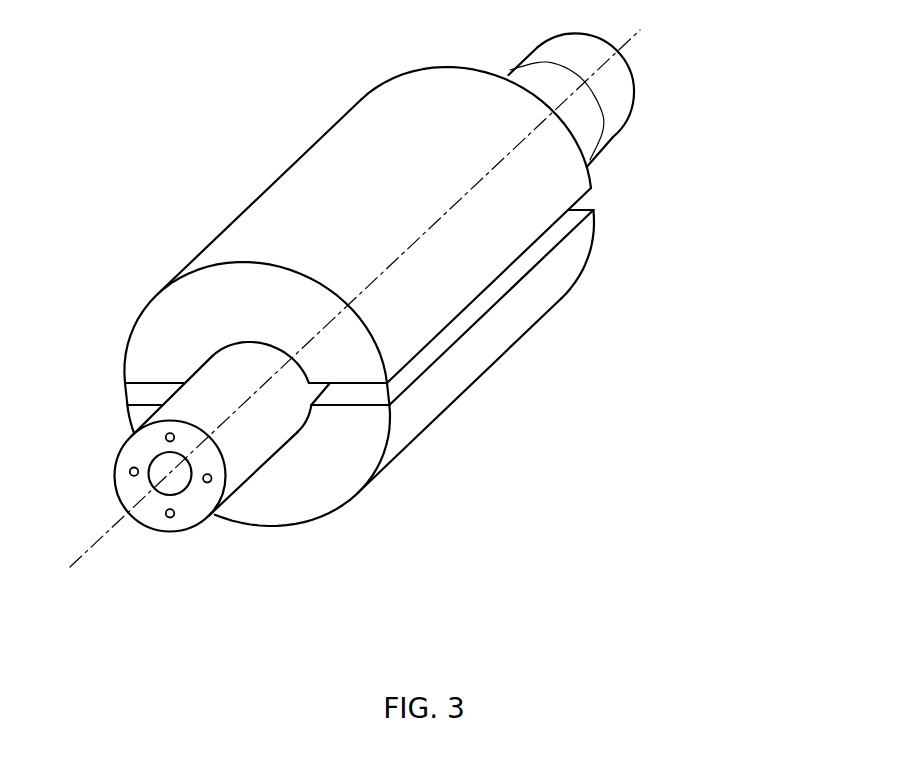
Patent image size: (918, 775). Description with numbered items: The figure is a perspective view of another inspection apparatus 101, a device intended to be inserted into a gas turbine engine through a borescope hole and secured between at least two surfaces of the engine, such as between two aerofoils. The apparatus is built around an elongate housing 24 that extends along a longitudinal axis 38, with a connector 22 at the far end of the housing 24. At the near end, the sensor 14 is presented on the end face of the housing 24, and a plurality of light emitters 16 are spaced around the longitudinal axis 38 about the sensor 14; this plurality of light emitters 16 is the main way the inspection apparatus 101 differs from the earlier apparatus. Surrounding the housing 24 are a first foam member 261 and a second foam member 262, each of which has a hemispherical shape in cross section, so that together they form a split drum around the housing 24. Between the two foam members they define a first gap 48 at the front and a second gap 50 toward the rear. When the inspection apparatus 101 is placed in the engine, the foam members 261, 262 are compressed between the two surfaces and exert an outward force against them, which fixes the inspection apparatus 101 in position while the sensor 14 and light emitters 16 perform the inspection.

The inspection apparatus 101 is at (780, 118).
The first foam member 261 is at (302, 183).
The second foam member 262 is at (332, 468).
The housing 24 is at (526, 80).
The connector 22 is at (620, 107).
The sensor 14 is at (176, 486).
The light emitters 16 is at (208, 473).
The longitudinal axis 38 is at (72, 567).
The first gap 48 is at (118, 390).
The second gap 50 is at (605, 195).